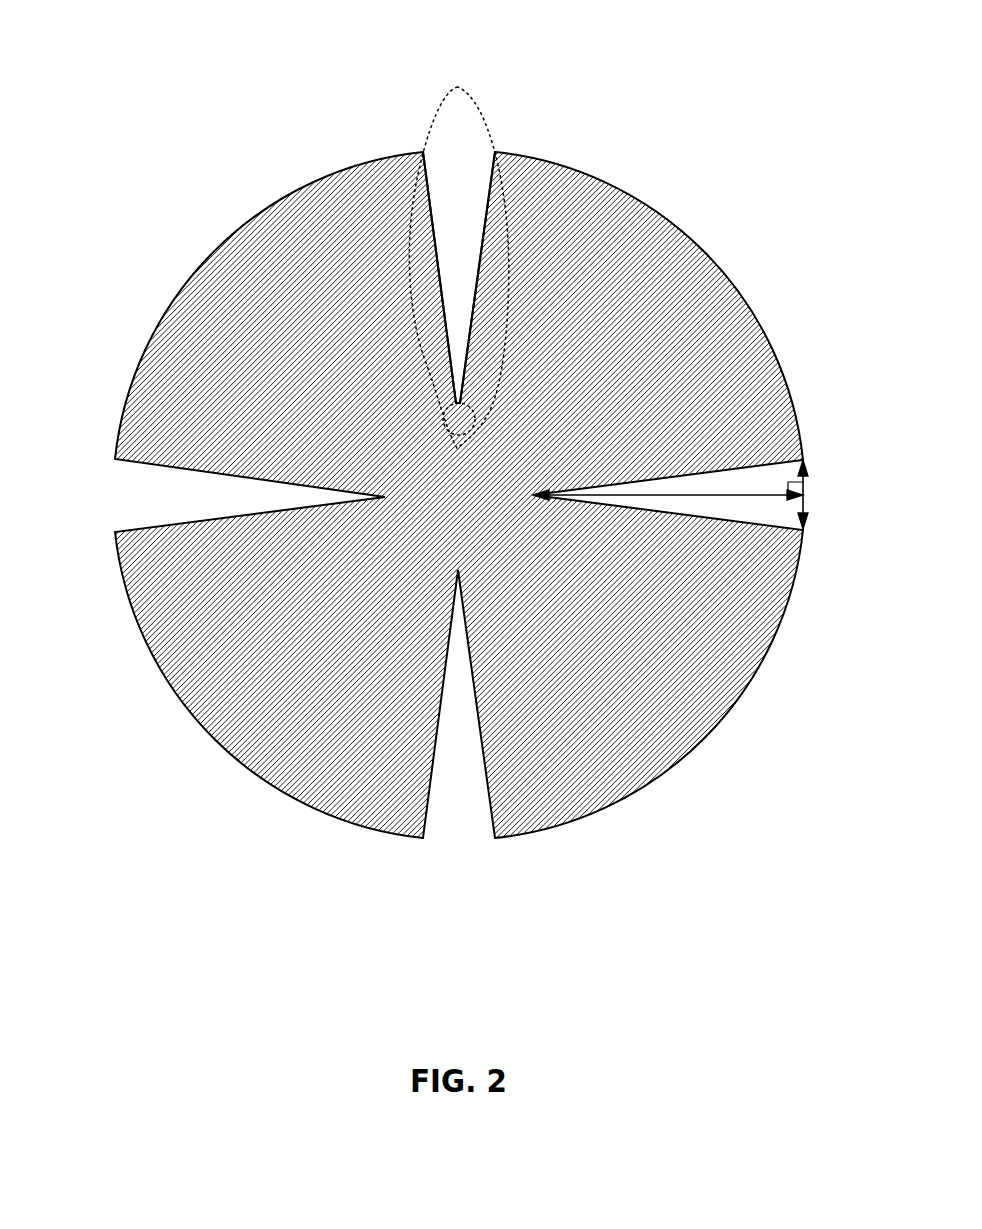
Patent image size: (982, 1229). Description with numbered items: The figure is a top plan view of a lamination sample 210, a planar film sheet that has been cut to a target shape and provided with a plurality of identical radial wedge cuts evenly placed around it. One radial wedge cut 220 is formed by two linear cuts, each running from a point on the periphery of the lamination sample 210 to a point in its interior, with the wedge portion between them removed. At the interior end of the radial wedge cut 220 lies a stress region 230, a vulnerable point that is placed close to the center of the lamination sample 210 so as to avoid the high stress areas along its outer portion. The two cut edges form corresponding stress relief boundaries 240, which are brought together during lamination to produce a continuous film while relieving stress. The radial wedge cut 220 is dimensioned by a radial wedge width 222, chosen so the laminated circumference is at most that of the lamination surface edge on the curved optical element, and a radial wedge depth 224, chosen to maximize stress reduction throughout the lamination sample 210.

The lamination sample 210 is at (104, 246).
The radial wedge cut 220 is at (458, 87).
The radial wedge width 222 is at (803, 505).
The radial wedge depth 224 is at (717, 495).
The stress region 230 is at (478, 420).
The corresponding stress relief boundaries 240 is at (487, 202).